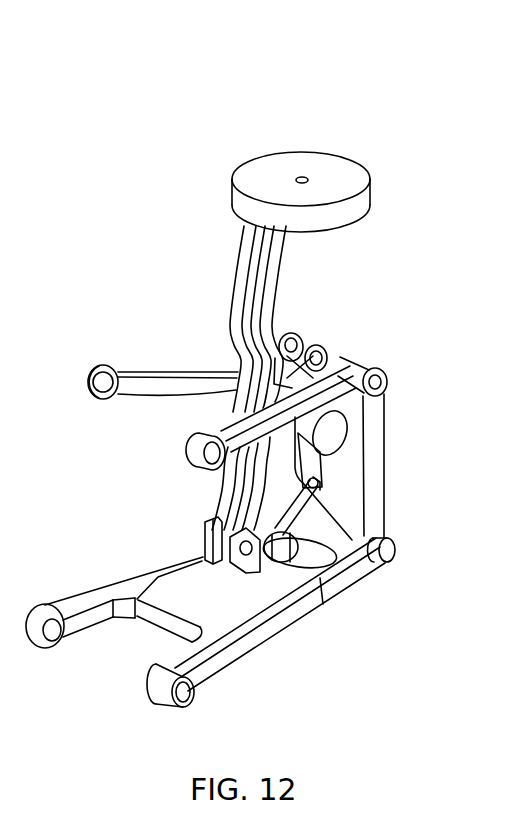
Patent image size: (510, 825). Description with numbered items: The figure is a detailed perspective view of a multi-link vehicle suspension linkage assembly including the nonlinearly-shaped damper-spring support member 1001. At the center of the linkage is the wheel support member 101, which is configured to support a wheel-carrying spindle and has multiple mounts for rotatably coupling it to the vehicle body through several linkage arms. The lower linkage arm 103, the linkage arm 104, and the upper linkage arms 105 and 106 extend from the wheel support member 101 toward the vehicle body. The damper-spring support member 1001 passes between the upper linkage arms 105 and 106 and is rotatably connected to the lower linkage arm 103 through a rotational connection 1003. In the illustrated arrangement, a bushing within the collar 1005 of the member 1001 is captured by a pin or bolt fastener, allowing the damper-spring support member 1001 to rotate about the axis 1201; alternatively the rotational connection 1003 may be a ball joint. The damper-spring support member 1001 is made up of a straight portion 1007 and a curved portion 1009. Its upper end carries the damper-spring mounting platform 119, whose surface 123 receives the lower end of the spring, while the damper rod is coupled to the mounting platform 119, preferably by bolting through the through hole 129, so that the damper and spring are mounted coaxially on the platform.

The wheel support member 101 is at (345, 480).
The lower linkage arm 103 is at (351, 572).
The linkage arm 104 is at (296, 515).
The upper linkage arm 105 is at (312, 418).
The upper linkage arm 106 is at (153, 389).
The damper-spring mounting platform 119 is at (268, 166).
The surface 123 is at (343, 178).
The through hole 129 is at (301, 170).
The nonlinearly-shaped damper-spring support member 1001 is at (224, 378).
The rotational connection 1003 is at (214, 578).
The collar 1005 is at (147, 573).
The straight portion 1007 is at (226, 482).
The curved portion 1009 is at (261, 301).
The axis 1201 is at (202, 523).